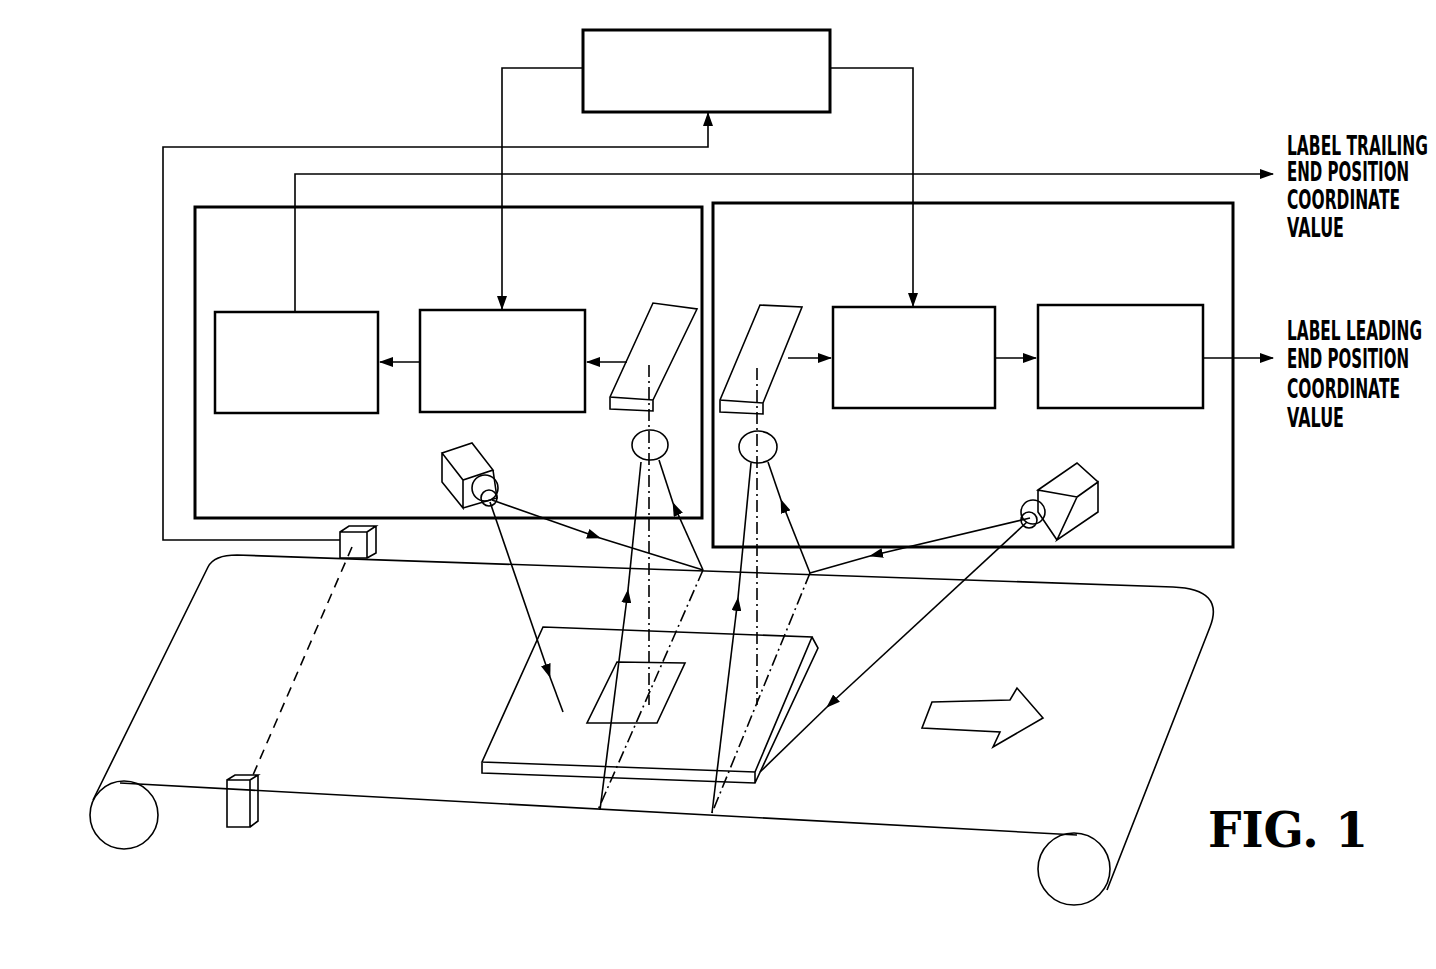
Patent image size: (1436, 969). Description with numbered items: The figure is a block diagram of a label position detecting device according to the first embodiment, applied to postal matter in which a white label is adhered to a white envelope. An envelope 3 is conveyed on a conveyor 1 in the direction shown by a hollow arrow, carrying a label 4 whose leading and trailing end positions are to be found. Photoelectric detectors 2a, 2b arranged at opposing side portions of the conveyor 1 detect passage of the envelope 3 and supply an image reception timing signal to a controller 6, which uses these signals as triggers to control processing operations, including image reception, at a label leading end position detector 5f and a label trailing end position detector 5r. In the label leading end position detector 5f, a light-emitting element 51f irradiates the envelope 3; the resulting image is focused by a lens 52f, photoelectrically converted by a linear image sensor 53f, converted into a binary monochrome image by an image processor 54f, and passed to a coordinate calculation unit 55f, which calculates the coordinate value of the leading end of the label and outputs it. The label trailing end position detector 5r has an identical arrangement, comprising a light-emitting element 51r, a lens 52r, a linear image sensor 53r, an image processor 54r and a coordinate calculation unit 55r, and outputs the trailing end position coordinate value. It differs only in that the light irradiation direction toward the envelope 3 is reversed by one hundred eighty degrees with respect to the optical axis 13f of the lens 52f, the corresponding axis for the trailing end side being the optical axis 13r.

The conveyor 1 is at (188, 612).
The photoelectric detector 2a is at (240, 775).
The photoelectric detector 2b is at (376, 540).
The envelope 3 is at (515, 685).
The label 4 is at (603, 688).
The label trailing end position detector 5r is at (260, 207).
The label leading end position detector 5f is at (1233, 526).
The controller 6 is at (830, 90).
The optical axis 13r is at (645, 611).
The optical axis 13f is at (760, 594).
The light-emitting element 51r is at (452, 483).
The light-emitting element 51f is at (1090, 497).
The lens 52r is at (631, 452).
The lens 52f is at (778, 453).
The linear image sensor 53r is at (612, 412).
The linear image sensor 53f is at (772, 398).
The image processor 54r is at (450, 413).
The image processor 54f is at (945, 410).
The coordinate calculation unit 55r is at (238, 413).
The coordinate calculation unit 55f is at (1155, 408).